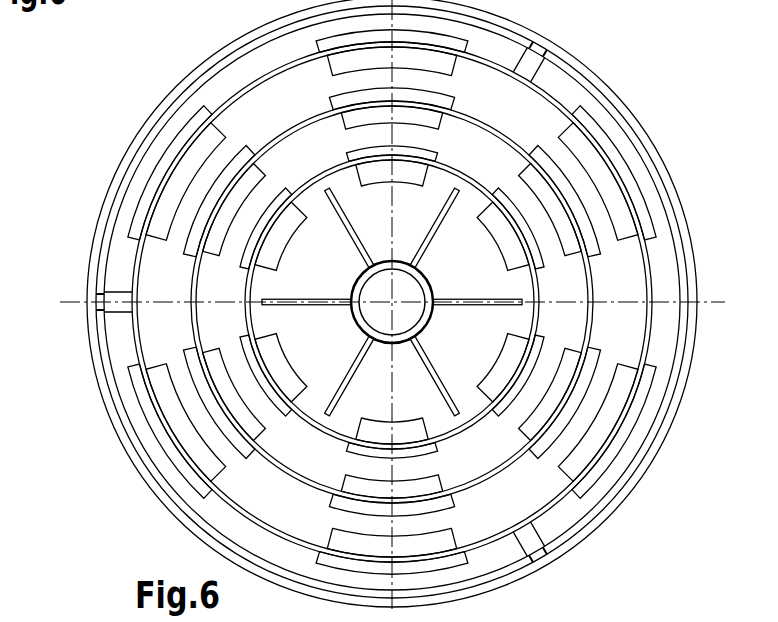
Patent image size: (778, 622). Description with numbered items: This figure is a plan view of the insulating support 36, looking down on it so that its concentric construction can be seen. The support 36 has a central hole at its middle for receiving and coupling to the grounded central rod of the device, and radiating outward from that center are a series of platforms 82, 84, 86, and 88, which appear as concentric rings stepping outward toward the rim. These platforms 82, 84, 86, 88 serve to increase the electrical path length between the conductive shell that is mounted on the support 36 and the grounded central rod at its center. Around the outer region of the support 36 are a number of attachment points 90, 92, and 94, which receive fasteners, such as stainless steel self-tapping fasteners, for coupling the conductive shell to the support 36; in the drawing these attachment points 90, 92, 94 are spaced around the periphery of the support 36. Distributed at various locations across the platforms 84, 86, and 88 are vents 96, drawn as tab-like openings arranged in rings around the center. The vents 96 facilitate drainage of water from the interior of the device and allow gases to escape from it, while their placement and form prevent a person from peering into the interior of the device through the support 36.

The insulating support 36 is at (125, 112).
The platform 82 is at (687, 317).
The platform 84 is at (662, 265).
The platform 86 is at (608, 250).
The platform 88 is at (537, 205).
The attachment point 90 is at (558, 22).
The attachment point 92 is at (560, 570).
The attachment point 94 is at (80, 292).
The vent 96 is at (615, 403).